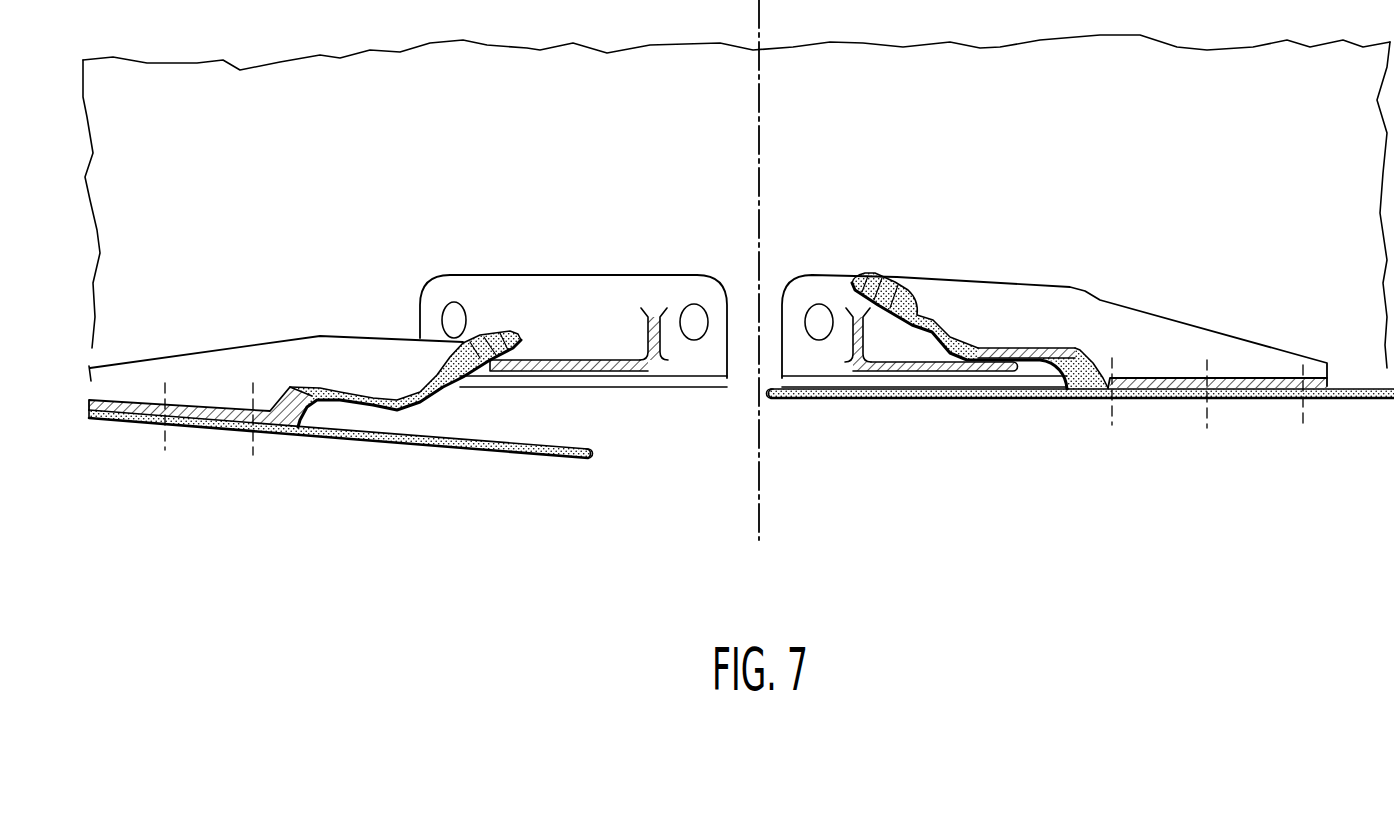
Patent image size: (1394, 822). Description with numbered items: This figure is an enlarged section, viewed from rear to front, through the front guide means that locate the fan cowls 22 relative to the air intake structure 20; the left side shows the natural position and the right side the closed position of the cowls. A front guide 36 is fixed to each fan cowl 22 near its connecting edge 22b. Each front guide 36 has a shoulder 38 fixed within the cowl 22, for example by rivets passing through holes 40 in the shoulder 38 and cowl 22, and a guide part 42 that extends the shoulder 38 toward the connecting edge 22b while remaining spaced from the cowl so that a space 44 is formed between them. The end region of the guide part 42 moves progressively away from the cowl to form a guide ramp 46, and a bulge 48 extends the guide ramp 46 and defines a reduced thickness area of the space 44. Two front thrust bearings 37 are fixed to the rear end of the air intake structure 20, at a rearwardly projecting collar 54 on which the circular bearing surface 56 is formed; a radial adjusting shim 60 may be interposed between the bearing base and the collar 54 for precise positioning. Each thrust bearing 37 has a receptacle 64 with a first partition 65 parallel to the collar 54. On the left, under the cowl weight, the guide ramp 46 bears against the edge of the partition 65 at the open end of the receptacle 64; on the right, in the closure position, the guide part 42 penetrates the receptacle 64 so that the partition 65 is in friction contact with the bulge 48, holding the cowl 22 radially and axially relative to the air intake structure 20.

The air intake structure 20 is at (663, 398).
The fan cowl 22 is at (306, 446).
The connecting edge 22b is at (595, 459).
The front guide 36 is at (250, 338).
The front thrust bearing 37 is at (781, 278).
The shoulder 38 is at (134, 403).
The holes 40 is at (120, 432).
The guide part 42 is at (378, 400).
The space 44 is at (348, 418).
The guide ramp 46 is at (446, 392).
The bulge 48 is at (400, 417).
The collar 54 is at (1037, 383).
The circular bearing surface 56 is at (560, 391).
The radial adjusting shim 60 is at (776, 370).
The receptacle 64 is at (603, 347).
The first partition 65 is at (547, 360).